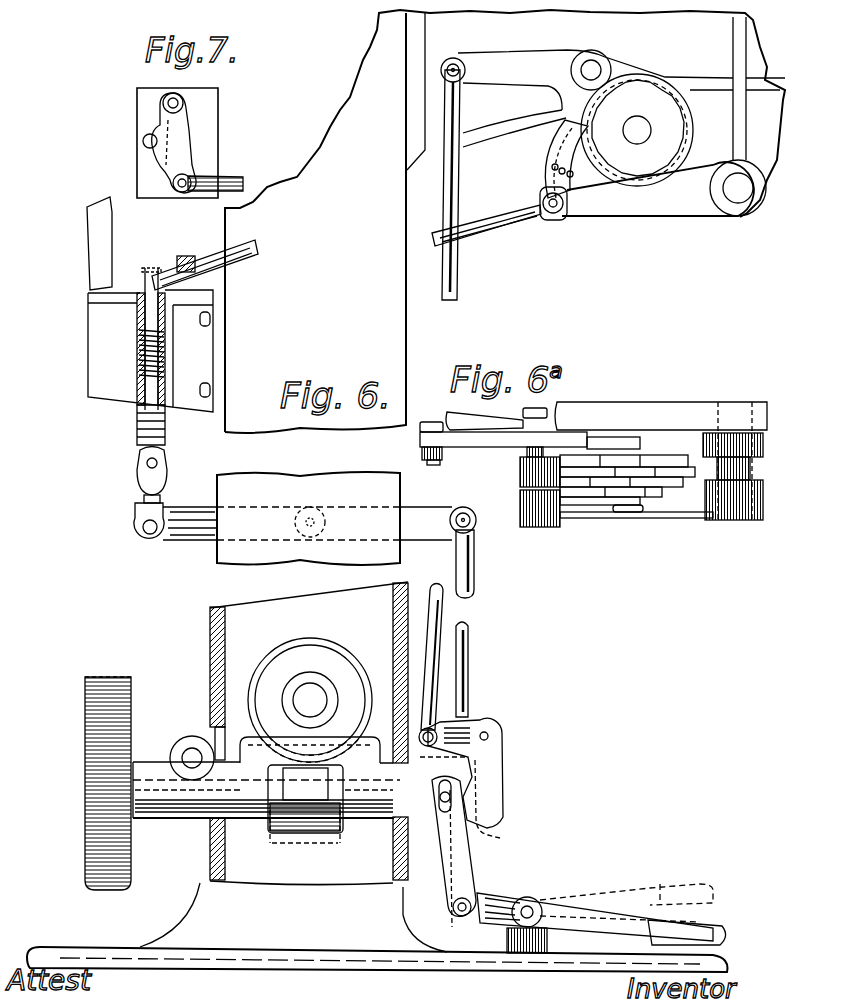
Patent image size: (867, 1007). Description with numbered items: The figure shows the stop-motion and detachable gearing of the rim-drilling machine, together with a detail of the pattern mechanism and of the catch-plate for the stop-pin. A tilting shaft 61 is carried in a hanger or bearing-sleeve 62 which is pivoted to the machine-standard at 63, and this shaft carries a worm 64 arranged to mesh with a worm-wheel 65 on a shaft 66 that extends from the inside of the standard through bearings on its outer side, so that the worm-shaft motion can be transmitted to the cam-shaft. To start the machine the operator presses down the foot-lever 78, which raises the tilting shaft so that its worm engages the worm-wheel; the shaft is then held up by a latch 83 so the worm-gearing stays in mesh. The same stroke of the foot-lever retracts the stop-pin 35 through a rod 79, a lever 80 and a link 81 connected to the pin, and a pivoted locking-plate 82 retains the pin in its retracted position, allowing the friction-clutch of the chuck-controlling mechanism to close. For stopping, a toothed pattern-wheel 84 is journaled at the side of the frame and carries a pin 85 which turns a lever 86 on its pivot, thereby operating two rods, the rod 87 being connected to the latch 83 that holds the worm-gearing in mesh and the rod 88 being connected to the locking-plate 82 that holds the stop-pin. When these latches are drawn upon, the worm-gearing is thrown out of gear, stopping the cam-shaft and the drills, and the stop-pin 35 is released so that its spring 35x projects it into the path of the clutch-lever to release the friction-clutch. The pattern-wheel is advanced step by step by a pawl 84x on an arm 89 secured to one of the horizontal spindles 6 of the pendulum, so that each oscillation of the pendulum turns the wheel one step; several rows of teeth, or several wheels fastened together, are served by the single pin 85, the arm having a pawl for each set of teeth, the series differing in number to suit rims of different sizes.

In FIG. 6, the horizontal spindle 6 is at (741, 194).
In FIG. 6A, the horizontal spindle 6 is at (743, 478).
In FIG. 7, the stop-pin 35 is at (144, 142).
In FIG. 6, the stop-pin 35 is at (146, 278).
In FIG. 6, the spring 35x is at (168, 356).
In FIG. 6, the shaft 61 is at (175, 801).
In FIG. 6, the hanger or bearing-sleeve 62 is at (236, 812).
In FIG. 6, the pivot 63 is at (186, 756).
In FIG. 6, the worm 64 is at (317, 821).
In FIG. 6, the worm-wheel 65 is at (318, 652).
In FIG. 6, the shaft 66 is at (312, 698).
In FIG. 6, the foot-lever 78 is at (711, 930).
In FIG. 6, the rod 79 is at (469, 688).
In FIG. 6, the lever 80 is at (436, 507).
In FIG. 6, the link 81 is at (140, 412).
In FIG. 7, the pivoted locking-plate 82 is at (180, 148).
In FIG. 6, the pivoted locking-plate 82 is at (165, 272).
In FIG. 6, the latch 83 is at (493, 770).
In FIG. 6, the toothed wheel 84 is at (662, 78).
In FIG. 6, the pawl 84x is at (567, 162).
In FIG. 6A, the pawl 84x is at (545, 490).
In FIG. 6, the pin 85 is at (614, 106).
In FIG. 6A, the pin 85 is at (604, 446).
In FIG. 6, the lever 86 is at (572, 46).
In FIG. 6A, the lever 86 is at (513, 442).
In FIG. 6, the rod 87 is at (457, 283).
In FIG. 7, the rod 88 is at (245, 189).
In FIG. 6, the rod 88 is at (495, 222).
In FIG. 6A, the rod 88 is at (516, 427).
In FIG. 6, the arm 89 is at (647, 191).
In FIG. 6A, the arm 89 is at (682, 520).